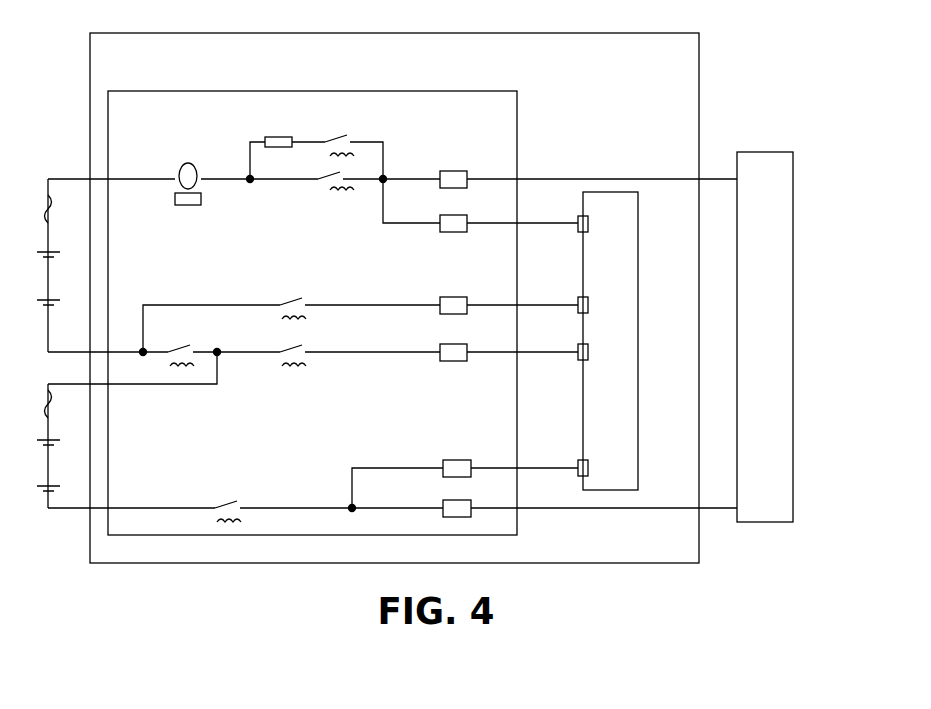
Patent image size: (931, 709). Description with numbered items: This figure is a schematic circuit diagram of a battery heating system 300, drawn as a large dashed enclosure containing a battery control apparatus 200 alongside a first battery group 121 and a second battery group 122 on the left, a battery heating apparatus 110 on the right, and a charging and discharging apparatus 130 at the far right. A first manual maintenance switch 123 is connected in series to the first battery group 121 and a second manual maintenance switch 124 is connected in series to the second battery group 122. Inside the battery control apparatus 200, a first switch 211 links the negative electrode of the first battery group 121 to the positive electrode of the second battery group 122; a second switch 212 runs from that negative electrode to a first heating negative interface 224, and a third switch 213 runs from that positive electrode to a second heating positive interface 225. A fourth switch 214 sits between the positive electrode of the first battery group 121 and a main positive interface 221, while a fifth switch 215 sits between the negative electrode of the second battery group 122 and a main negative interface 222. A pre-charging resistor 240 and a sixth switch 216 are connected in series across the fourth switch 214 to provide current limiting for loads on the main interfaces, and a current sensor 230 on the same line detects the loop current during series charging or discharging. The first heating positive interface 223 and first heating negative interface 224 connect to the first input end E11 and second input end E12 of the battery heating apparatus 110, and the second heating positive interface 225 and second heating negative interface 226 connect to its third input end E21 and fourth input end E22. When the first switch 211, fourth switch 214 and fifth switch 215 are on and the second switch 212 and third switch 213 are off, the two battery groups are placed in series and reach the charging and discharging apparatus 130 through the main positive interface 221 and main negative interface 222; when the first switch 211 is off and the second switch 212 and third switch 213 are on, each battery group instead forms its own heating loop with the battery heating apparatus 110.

The battery heating system 300 is at (398, 33).
The battery control apparatus 200 is at (310, 91).
The battery heating apparatus 110 is at (640, 338).
The charging and discharging apparatus 130 is at (795, 333).
The first battery group 121 is at (36, 278).
The second battery group 122 is at (36, 465).
The first manual maintenance switch 123 is at (32, 209).
The second manual maintenance switch 124 is at (32, 404).
The first switch 211 is at (180, 347).
The second switch 212 is at (293, 302).
The third switch 213 is at (293, 346).
The fourth switch 214 is at (329, 200).
The fifth switch 215 is at (226, 503).
The sixth switch 216 is at (340, 136).
The main positive interface 221 is at (453, 169).
The main negative interface 222 is at (457, 499).
The first heating positive interface 223 is at (453, 215).
The first heating negative interface 224 is at (453, 297).
The second heating positive interface 225 is at (453, 343).
The second heating negative interface 226 is at (457, 456).
The current sensor 230 is at (189, 168).
The pre-charging resistor 240 is at (277, 132).
The first input end E11 is at (527, 215).
The second input end E12 is at (527, 296).
The third input end E21 is at (527, 343).
The fourth input end E22 is at (529, 458).